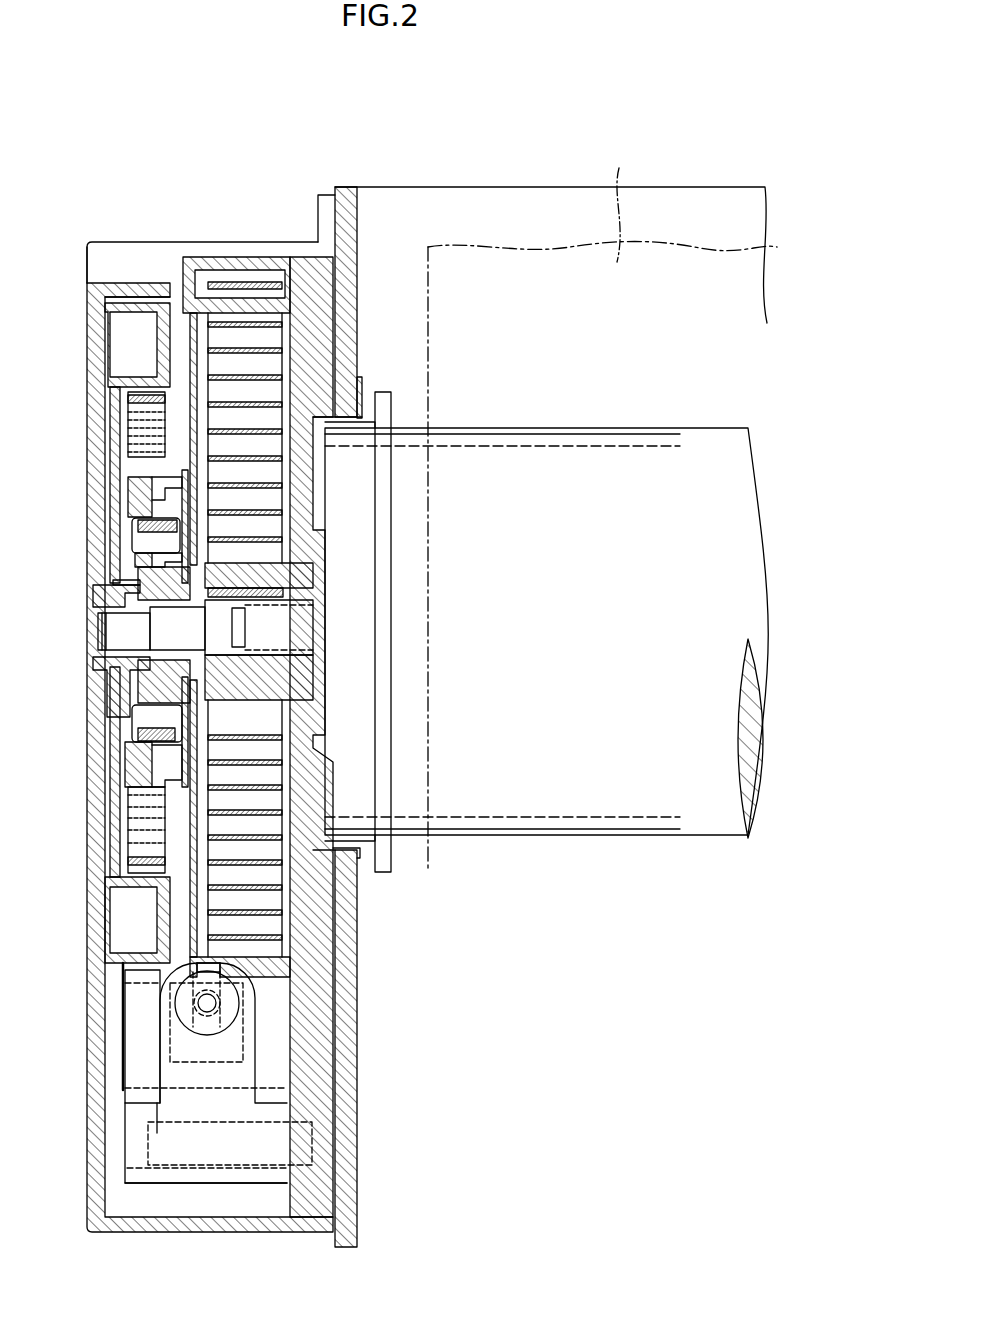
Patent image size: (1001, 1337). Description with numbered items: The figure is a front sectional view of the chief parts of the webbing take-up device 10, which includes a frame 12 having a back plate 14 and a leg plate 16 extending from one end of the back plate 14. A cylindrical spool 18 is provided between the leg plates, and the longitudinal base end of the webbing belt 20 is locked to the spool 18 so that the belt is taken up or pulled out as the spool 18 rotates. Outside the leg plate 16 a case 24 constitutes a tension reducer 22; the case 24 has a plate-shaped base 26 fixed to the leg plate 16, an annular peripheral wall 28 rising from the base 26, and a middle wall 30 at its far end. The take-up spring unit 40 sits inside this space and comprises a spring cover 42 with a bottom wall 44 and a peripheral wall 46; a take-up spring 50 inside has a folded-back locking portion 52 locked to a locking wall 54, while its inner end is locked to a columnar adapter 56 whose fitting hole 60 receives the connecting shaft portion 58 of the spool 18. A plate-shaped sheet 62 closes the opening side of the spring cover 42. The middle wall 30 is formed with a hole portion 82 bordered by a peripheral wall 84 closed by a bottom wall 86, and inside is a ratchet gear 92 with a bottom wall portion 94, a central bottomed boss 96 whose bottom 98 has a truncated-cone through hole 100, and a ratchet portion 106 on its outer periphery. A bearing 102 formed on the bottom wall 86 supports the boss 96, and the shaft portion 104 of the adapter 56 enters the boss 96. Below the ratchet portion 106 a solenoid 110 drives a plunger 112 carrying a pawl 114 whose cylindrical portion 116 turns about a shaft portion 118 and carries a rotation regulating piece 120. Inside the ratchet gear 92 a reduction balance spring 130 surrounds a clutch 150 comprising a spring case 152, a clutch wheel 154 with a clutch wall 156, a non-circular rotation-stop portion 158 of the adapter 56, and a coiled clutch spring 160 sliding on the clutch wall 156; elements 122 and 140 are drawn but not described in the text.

The webbing take-up device 10 is at (710, 97).
The frame 12 is at (551, 183).
The back plate 14 is at (468, 187).
The leg plate 16 is at (350, 189).
The spool 18 is at (412, 458).
The webbing belt 20 is at (614, 255).
The tension reducer 22 is at (153, 196).
The case 24 is at (283, 228).
The base 26 is at (318, 220).
The peripheral wall 28 is at (226, 257).
The middle wall 30 is at (135, 300).
The take-up spring unit 40 is at (354, 300).
The spring cover 42 is at (300, 990).
The bottom wall 44 is at (195, 866).
The peripheral wall 46 is at (281, 991).
The take-up spring 50 is at (262, 772).
The locking portion 52 is at (262, 284).
The locking wall 54 is at (242, 284).
The adapter 56 is at (300, 682).
The connecting shaft portion 58 is at (280, 602).
The fitting hole 60 is at (190, 624).
The sheet 62 is at (250, 1100).
The hole portion 82 is at (187, 270).
The peripheral wall 84 is at (118, 302).
The bottom wall 86 is at (100, 342).
The ratchet gear 92 is at (92, 278).
The bottom wall portion 94 is at (115, 452).
The boss 96 is at (118, 607).
The bottom 98 is at (105, 592).
The through hole 100 is at (115, 657).
The bearing 102 is at (103, 690).
The shaft portion 104 is at (110, 634).
The ratchet portion 106 is at (112, 940).
The solenoid 110 is at (270, 1042).
The plunger 112 is at (210, 1036).
The pawl 114 is at (107, 1055).
The cylindrical portion 116 is at (265, 1185).
The shaft portion 118 is at (232, 1165).
The rotation regulating piece 120 is at (123, 1067).
The bracket arm 122 is at (200, 1105).
The reduction balance spring 130 is at (148, 474).
The laminated plates 140 is at (140, 398).
The clutch 150 is at (148, 782).
The spring case 152 is at (150, 822).
The clutch wheel 154 is at (172, 565).
The clutch wall 156 is at (150, 527).
The rotation-stop portion 158 is at (290, 614).
The clutch spring 160 is at (140, 750).